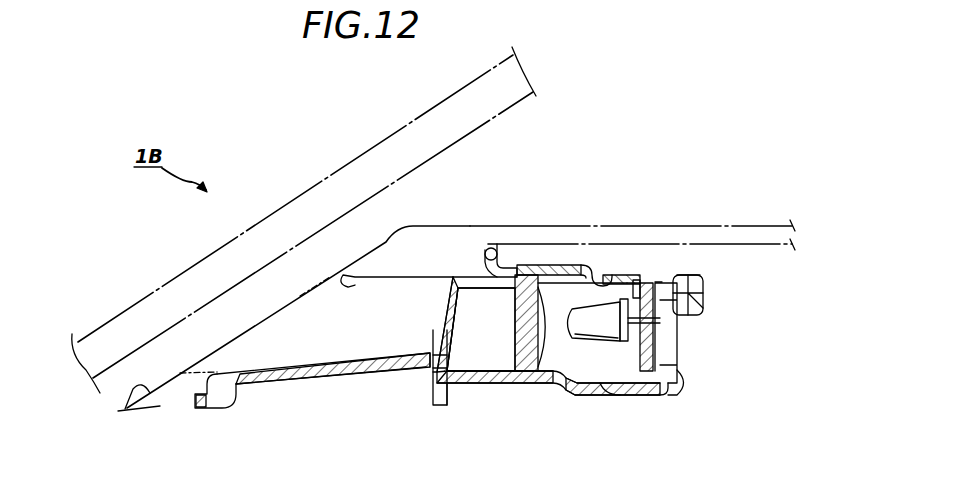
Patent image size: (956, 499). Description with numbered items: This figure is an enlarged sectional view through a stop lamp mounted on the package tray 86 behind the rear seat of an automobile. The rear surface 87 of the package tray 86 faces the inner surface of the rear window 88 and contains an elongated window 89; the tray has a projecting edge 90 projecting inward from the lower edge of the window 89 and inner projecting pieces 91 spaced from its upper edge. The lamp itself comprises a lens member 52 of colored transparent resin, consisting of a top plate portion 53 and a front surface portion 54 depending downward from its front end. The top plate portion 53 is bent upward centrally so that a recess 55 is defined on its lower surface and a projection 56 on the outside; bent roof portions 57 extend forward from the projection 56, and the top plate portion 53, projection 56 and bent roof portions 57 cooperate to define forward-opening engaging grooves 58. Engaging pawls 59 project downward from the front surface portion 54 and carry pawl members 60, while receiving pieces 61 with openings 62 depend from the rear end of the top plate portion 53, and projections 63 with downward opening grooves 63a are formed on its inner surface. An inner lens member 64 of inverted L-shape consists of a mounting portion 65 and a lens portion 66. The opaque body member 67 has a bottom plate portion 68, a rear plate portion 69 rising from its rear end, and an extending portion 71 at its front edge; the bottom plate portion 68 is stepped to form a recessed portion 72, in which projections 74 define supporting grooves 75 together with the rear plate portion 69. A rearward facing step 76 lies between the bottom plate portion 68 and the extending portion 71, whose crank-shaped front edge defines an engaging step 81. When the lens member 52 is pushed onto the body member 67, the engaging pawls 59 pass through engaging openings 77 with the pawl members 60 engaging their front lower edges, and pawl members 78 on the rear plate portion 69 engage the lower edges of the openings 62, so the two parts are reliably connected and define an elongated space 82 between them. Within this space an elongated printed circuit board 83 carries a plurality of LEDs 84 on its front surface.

The lens member 52 is at (621, 268).
The top plate portion 53 is at (605, 270).
The front surface portion 54 is at (446, 300).
The recess 55 is at (567, 268).
The projection 56 is at (587, 272).
The bent roof portions 57 is at (484, 250).
The engaging grooves 58 is at (497, 276).
The engaging pawls 59 is at (447, 405).
The pawl members 60 is at (435, 386).
The receiving pieces 61 is at (705, 284).
The openings 62 is at (703, 294).
The projections 63 is at (645, 278).
The downward opening grooves 63a is at (657, 281).
The inner lens member 64 is at (521, 375).
The mounting portion 65 is at (537, 266).
The lens portion 66 is at (549, 330).
The body member 67 is at (678, 375).
The bottom plate portion 68 is at (485, 385).
The rear plate portion 69 is at (670, 392).
The extending portion 71 is at (278, 378).
The recessed portion 72 is at (596, 381).
The projections 74 is at (616, 396).
The supporting grooves 75 is at (651, 396).
The rearward facing step 76 is at (435, 355).
The engaging openings 77 is at (436, 405).
The pawl members 78 is at (700, 277).
The engaging step 81 is at (207, 410).
The space 82 is at (493, 343).
The printed circuit board 83 is at (655, 345).
The LEDs 84 is at (590, 340).
The package tray 86 is at (697, 226).
The rear surface 87 is at (345, 250).
The rear window 88 is at (408, 124).
The window 89 is at (320, 281).
The projecting edge 90 is at (126, 410).
The inner projecting pieces 91 is at (205, 367).